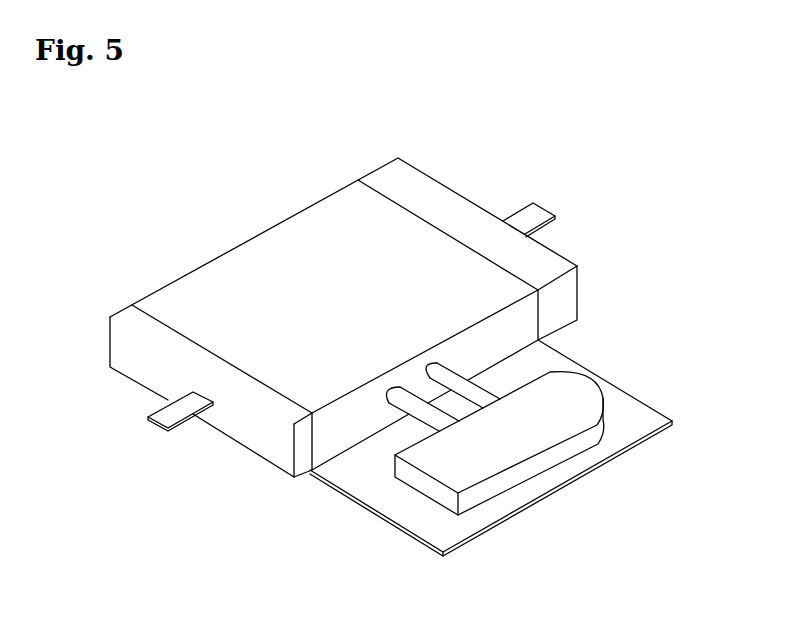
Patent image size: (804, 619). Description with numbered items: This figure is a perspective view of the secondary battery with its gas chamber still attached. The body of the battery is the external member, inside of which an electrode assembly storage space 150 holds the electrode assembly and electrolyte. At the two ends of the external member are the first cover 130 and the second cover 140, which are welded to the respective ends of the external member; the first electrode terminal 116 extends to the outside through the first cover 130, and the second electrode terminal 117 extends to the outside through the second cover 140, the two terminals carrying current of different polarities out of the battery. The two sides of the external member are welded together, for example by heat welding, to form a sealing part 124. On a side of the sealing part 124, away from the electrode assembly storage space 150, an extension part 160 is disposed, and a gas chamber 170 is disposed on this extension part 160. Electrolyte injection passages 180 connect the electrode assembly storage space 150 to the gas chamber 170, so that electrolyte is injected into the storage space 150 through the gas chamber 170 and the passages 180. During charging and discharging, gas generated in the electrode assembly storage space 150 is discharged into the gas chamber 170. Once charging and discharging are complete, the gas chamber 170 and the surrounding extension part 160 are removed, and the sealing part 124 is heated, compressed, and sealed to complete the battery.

The electrode assembly storage space 150 is at (243, 240).
The first cover 130 is at (380, 175).
The second cover 140 is at (127, 315).
The first electrode terminal 116 is at (540, 212).
The second electrode terminal 117 is at (160, 423).
The sealing part 124 is at (525, 348).
The extension part 160 is at (632, 412).
The gas chamber 170 is at (438, 475).
The electrolyte injection passages 180 is at (428, 419).